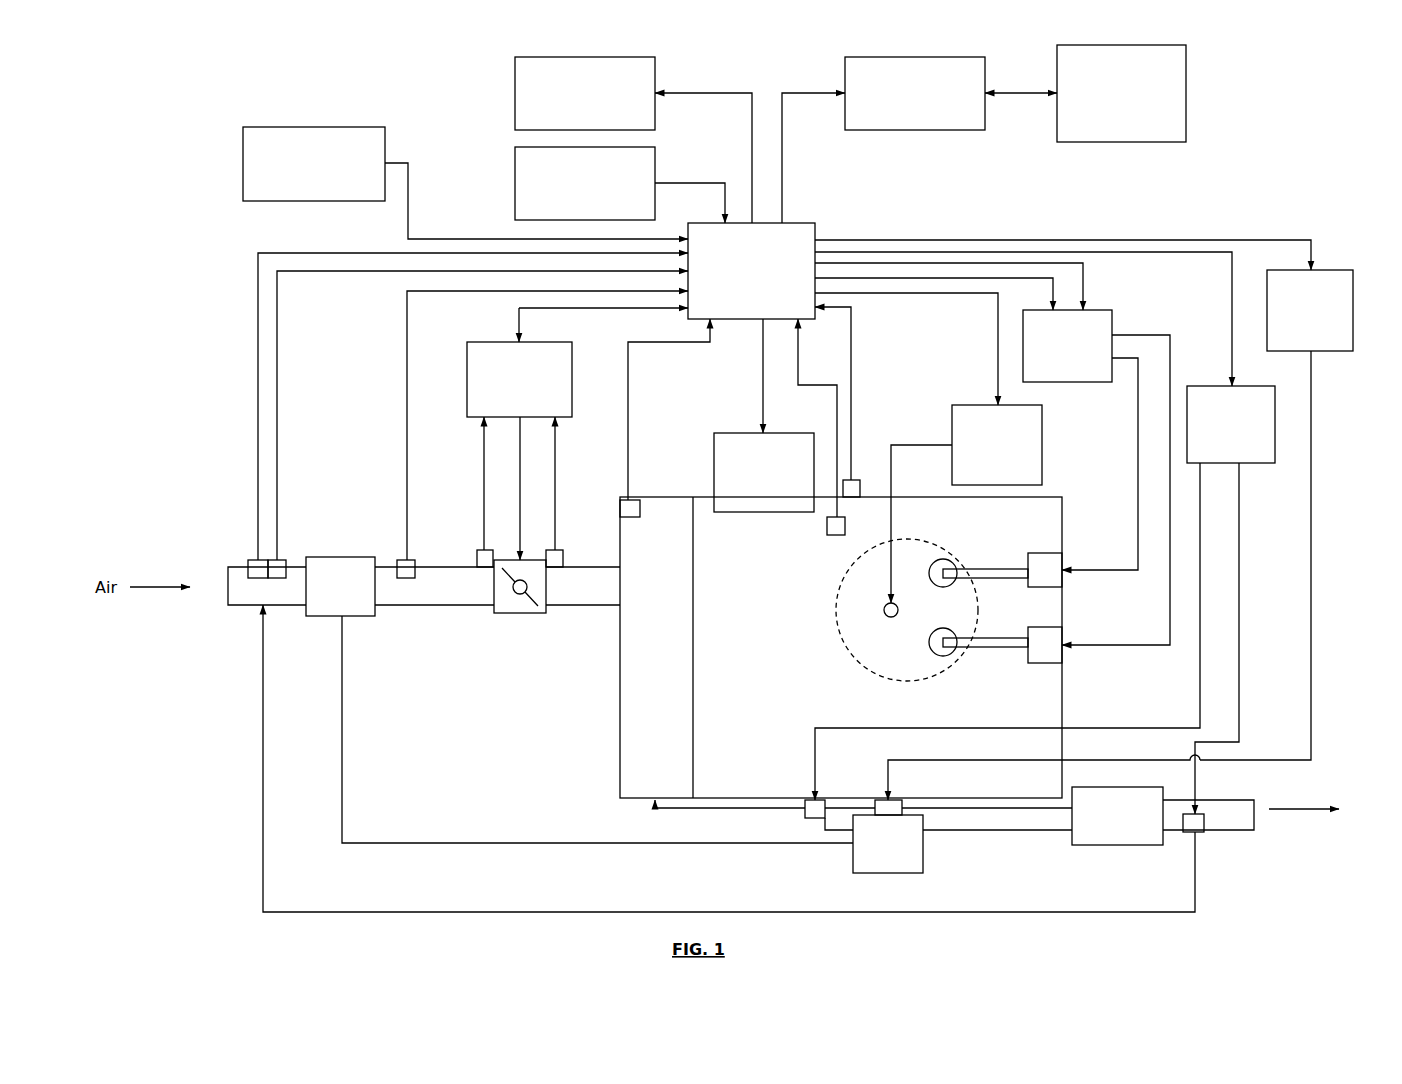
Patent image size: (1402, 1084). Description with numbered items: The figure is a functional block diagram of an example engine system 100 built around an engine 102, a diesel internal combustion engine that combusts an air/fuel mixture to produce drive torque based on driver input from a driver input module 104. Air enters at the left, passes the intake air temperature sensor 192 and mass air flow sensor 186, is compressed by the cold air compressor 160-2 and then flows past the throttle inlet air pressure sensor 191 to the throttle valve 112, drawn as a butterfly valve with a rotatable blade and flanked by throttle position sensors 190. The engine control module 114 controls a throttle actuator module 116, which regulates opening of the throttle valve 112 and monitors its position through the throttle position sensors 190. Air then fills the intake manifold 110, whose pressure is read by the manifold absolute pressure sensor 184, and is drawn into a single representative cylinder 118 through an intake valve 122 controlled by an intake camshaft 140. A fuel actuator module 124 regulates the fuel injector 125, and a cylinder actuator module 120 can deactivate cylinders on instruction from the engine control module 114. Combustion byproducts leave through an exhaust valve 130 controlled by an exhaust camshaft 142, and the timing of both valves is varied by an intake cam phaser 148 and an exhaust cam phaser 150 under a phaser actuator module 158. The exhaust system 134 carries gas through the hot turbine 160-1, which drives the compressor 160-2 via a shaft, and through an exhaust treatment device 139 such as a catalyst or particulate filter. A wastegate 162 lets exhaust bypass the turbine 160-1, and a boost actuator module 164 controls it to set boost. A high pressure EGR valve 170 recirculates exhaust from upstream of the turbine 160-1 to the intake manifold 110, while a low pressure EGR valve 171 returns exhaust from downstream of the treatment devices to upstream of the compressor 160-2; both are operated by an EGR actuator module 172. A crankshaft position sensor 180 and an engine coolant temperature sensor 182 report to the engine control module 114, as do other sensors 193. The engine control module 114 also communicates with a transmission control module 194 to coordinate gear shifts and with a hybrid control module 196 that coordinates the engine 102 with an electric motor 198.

The engine system 100 is at (84, 82).
The engine 102 is at (1062, 512).
The driver input module 104 is at (515, 183).
The intake manifold 110 is at (620, 732).
The throttle valve 112 is at (520, 613).
The engine control module 114 is at (815, 235).
The throttle actuator module 116 is at (492, 342).
The cylinder 118 is at (868, 672).
The cylinder actuator module 120 is at (778, 433).
The intake valve 122 is at (946, 559).
The fuel actuator module 124 is at (1042, 446).
The fuel injector 125 is at (884, 610).
The exhaust valve 130 is at (946, 657).
The exhaust system 134 is at (1222, 832).
The exhaust treatment device 139 is at (1110, 846).
The intake camshaft 140 is at (1006, 569).
The exhaust camshaft 142 is at (1006, 648).
The intake cam phaser 148 is at (1046, 553).
The exhaust cam phaser 150 is at (1046, 663).
The phaser actuator module 158 is at (1112, 322).
The turbine 160-1 is at (923, 850).
The compressor 160-2 is at (360, 616).
The wastegate 162 is at (902, 810).
The boost actuator module 164 is at (1335, 351).
The high pressure EGR valve 170 is at (812, 820).
The low pressure EGR valve 171 is at (1188, 832).
The EGR actuator module 172 is at (1255, 463).
The crankshaft position sensor 180 is at (855, 480).
The engine coolant temperature sensor 182 is at (836, 535).
The manifold absolute pressure sensor 184 is at (620, 506).
The mass air flow sensor 186 is at (284, 560).
The throttle position sensor 190 is at (487, 572).
The throttle inlet air pressure sensor 191 is at (400, 560).
The intake air temperature sensor 192 is at (248, 564).
The other sensors 193 is at (243, 162).
The transmission control module 194 is at (515, 93).
The hybrid control module 196 is at (915, 130).
The electric motor 198 is at (1135, 142).